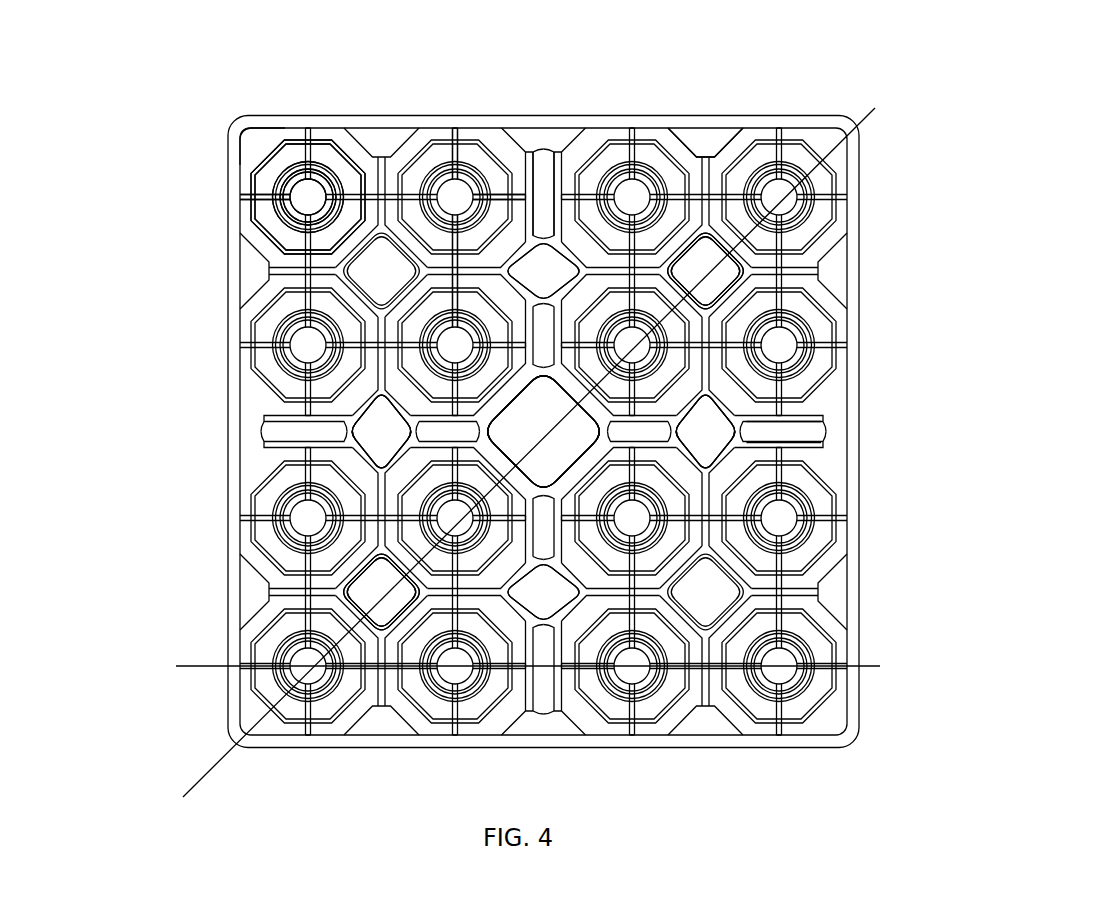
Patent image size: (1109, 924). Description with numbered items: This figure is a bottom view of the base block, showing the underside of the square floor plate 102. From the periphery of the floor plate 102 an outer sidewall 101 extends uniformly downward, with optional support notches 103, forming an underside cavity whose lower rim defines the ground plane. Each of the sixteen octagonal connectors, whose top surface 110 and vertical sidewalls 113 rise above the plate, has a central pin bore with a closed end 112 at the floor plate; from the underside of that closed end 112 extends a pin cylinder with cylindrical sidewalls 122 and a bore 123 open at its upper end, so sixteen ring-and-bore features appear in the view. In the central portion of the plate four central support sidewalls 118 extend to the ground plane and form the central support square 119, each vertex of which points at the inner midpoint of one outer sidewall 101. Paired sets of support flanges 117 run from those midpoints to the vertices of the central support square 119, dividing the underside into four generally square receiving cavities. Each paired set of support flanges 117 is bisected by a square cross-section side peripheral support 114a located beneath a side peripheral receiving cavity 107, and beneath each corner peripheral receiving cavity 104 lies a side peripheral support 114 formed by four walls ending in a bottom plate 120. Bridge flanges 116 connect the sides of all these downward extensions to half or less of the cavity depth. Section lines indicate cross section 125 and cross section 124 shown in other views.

The outer sidewall 101 is at (283, 121).
The floor plate 102 is at (253, 148).
The support notches 103 is at (705, 137).
The corner peripheral receiving cavity 104 is at (373, 581).
The side peripheral receiving cavity 107 is at (375, 437).
The top surface 110 is at (258, 214).
The closed end 112 is at (306, 200).
The vertical sidewalls 113 is at (358, 160).
The side peripheral support 114 is at (717, 290).
The side peripheral support 114a is at (700, 437).
The bridge flanges 116 is at (253, 191).
The support flanges 117 is at (534, 224).
The central support sidewalls 118 is at (584, 462).
The central support square 119 is at (574, 437).
The bottom plate 120 is at (367, 590).
The cylindrical sidewalls 122 is at (291, 204).
The bore 123 is at (283, 182).
The cross section 124 is at (875, 108).
The cross section 125 is at (176, 666).